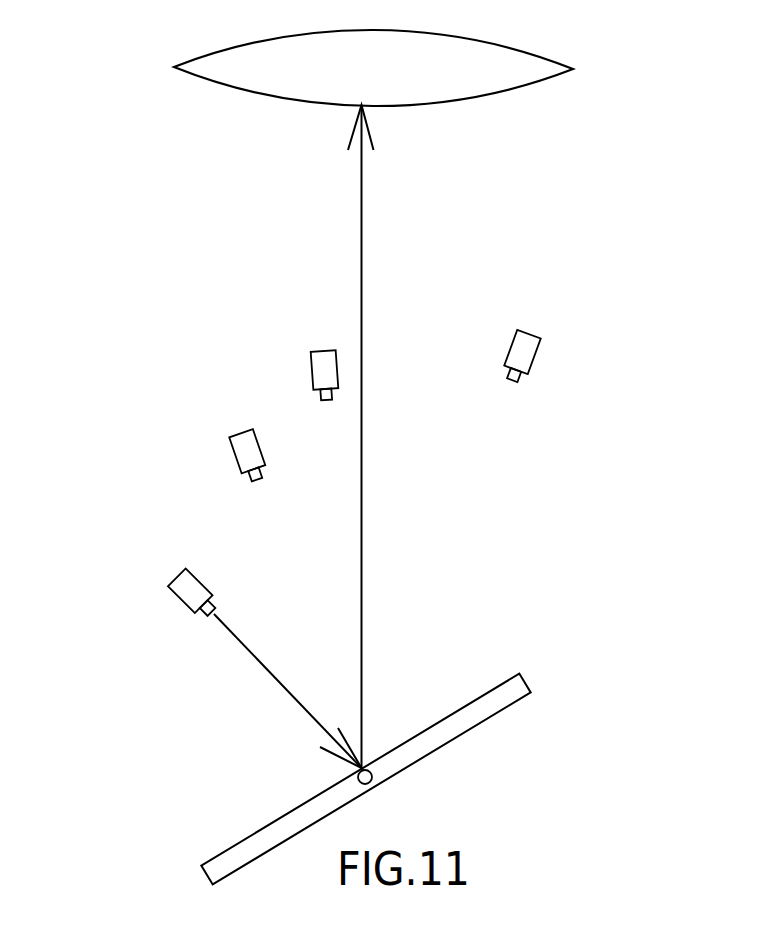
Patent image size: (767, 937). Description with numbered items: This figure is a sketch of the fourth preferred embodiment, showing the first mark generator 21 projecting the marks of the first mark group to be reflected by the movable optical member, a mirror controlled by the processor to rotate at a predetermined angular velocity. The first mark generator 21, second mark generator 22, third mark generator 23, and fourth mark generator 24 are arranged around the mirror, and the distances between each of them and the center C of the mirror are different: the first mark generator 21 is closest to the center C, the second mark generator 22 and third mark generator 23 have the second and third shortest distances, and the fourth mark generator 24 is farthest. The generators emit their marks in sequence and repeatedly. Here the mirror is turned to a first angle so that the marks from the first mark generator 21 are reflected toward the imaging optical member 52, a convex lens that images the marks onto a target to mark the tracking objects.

The imaging optical member 52 is at (497, 80).
The first mark generator 21 is at (182, 588).
The second mark generator 22 is at (248, 448).
The third mark generator 23 is at (325, 352).
The fourth mark generator 24 is at (525, 357).
The center of the movable optical member C is at (363, 765).